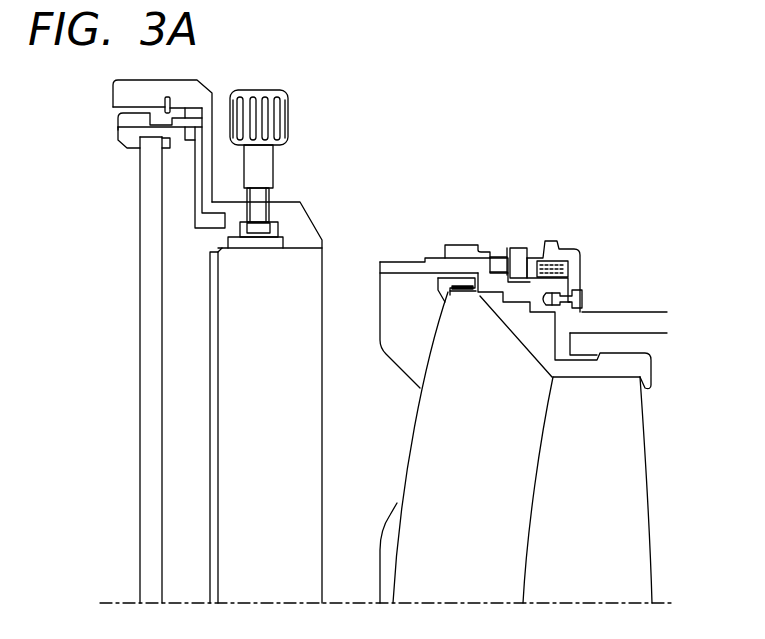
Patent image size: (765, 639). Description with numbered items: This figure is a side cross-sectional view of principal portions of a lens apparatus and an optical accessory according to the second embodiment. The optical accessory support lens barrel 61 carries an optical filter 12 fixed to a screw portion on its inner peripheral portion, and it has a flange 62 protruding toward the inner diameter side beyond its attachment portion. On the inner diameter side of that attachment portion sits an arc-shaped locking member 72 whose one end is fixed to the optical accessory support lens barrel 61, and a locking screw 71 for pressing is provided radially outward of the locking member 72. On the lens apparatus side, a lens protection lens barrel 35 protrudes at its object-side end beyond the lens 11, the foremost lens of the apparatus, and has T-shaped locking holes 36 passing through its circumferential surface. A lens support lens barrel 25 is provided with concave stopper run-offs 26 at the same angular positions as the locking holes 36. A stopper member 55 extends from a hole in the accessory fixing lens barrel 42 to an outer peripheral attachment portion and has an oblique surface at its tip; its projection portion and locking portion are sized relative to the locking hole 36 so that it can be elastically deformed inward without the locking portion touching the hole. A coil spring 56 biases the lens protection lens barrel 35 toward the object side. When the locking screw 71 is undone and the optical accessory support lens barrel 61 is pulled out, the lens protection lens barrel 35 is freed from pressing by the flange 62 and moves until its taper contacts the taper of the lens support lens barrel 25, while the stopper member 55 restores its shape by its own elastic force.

The lens 11 is at (410, 480).
The optical filter 12 is at (148, 194).
The lens support lens barrel 25 is at (479, 298).
The stopper run-off 26 is at (513, 296).
The lens protection lens barrel 35 is at (393, 262).
The locking hole 36 is at (497, 262).
The accessory fixing lens barrel 42 is at (450, 246).
The stopper member 55 is at (520, 250).
The coil spring 56 is at (562, 258).
The optical accessory support lens barrel 61 is at (118, 93).
The flange 62 is at (212, 254).
The locking screw 71 is at (266, 93).
The locking member 72 is at (261, 247).